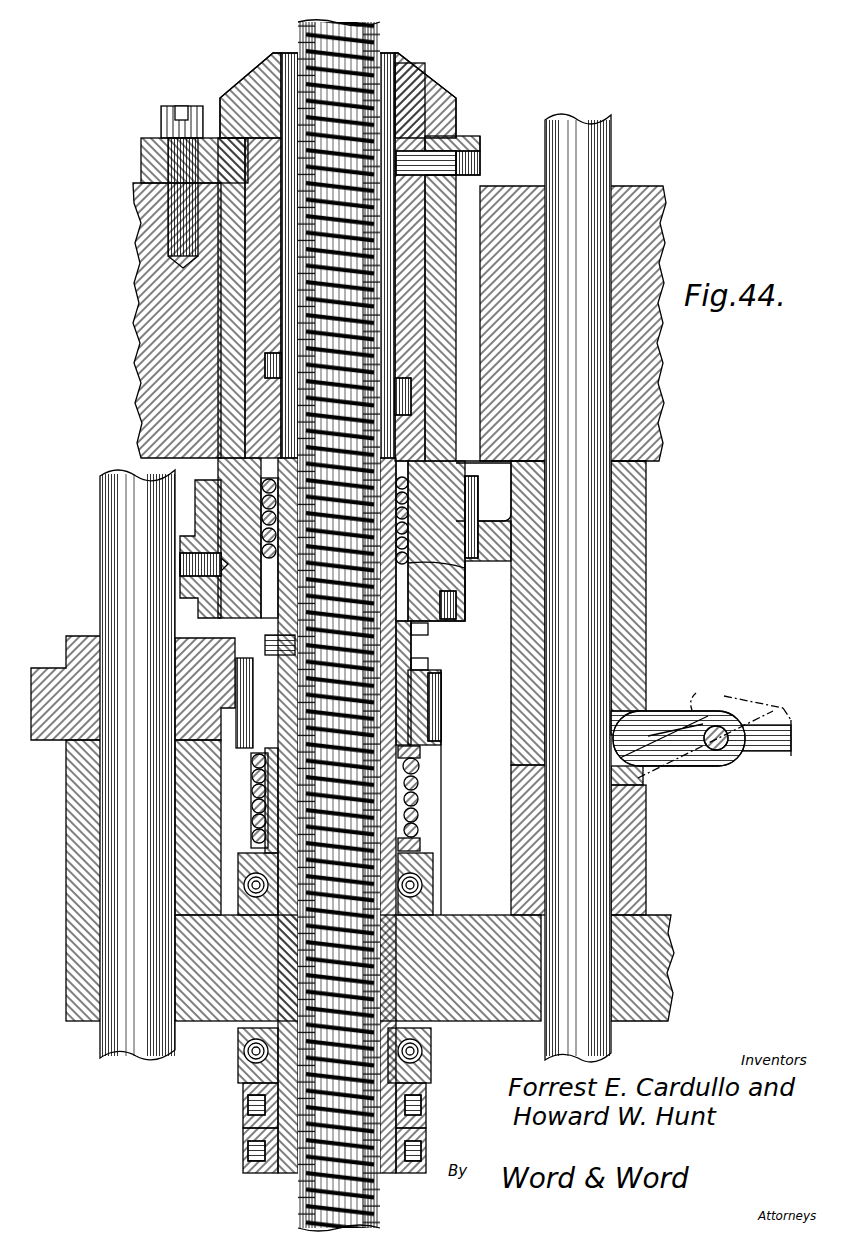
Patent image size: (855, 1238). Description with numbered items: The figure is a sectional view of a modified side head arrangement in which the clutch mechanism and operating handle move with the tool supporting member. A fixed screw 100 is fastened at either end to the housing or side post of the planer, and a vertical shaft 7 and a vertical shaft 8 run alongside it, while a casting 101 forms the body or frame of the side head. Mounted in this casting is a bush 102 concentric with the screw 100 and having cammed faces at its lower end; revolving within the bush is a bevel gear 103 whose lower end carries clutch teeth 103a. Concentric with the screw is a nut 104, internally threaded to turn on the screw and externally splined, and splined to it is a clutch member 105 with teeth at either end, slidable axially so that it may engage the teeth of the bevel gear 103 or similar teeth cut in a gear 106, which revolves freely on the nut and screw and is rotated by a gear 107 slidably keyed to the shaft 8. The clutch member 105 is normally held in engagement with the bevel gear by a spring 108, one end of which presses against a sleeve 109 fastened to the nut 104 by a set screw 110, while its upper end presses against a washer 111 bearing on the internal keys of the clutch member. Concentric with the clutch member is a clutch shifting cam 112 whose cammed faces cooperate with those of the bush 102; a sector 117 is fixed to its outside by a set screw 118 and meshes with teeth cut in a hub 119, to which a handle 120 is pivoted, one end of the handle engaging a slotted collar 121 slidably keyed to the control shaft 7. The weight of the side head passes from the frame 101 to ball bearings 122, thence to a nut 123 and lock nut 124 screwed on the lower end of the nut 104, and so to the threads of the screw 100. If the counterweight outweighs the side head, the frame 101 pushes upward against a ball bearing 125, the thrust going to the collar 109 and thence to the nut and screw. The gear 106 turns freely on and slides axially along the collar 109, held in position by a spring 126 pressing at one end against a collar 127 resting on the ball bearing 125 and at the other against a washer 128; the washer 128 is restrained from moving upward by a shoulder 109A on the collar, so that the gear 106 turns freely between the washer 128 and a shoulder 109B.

The vertical shaft 7 is at (578, 588).
The vertical shaft 8 is at (137, 765).
The fixed screw 100 is at (290, 30).
The casting 101 is at (648, 385).
The bush 102 is at (468, 134).
The bevel gear 103 is at (435, 112).
The clutch teeth 103a is at (403, 352).
The nut 104 is at (264, 422).
The clutch member 105 is at (262, 440).
The gear 106 is at (425, 665).
The gear 107 is at (40, 660).
The spring 108 is at (445, 565).
The sleeve 109 is at (400, 593).
The shoulder 109A is at (243, 750).
The shoulder 109B is at (232, 672).
The set screw 110 is at (257, 635).
The washer 111 is at (450, 468).
The clutch shifting cam 112 is at (497, 560).
The sector 117 is at (471, 488).
The set screw 118 is at (172, 560).
The hub 119 is at (627, 558).
The handle 120 is at (690, 704).
The slotted collar 121 is at (630, 846).
The ball bearings 122 is at (418, 1048).
The nut 123 is at (418, 1086).
The lock nut 124 is at (418, 1128).
The ball bearing 125 is at (425, 862).
The spring 126 is at (412, 758).
The collar 127 is at (413, 838).
The washer 128 is at (413, 745).